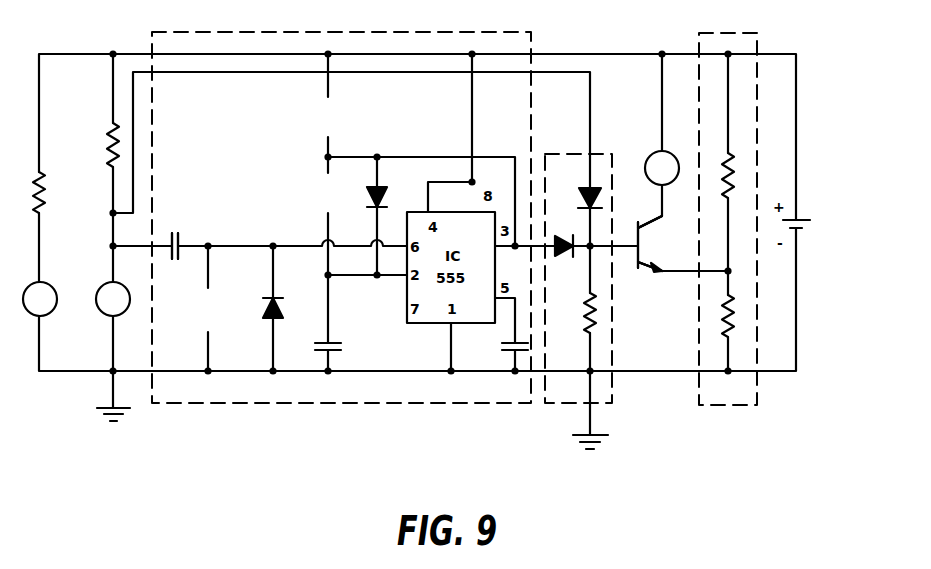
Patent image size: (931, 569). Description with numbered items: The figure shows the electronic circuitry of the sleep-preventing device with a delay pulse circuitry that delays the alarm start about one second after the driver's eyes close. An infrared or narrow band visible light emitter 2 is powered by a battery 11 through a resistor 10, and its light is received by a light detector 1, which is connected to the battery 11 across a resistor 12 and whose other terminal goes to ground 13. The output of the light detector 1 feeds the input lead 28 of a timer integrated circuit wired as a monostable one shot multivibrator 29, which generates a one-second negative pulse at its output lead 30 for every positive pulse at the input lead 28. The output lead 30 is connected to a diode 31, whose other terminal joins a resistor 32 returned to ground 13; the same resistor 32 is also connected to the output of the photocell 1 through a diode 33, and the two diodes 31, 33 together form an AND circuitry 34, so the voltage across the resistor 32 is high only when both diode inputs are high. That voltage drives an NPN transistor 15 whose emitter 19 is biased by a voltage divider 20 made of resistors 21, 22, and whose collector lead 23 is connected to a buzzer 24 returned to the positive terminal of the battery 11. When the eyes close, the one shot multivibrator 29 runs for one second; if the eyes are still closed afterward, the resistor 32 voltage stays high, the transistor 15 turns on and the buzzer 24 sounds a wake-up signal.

The light detector 1 is at (103, 316).
The light emitter 2 is at (55, 288).
The resistor 10 is at (45, 193).
The battery 11 is at (805, 218).
The resistor 12 is at (106, 143).
The ground 13 is at (108, 392).
The NPN transistor 15 is at (637, 230).
The emitter 19 is at (647, 275).
The voltage divider 20 is at (726, 32).
The resistor 21 is at (733, 163).
The resistor 22 is at (735, 318).
The collector lead 23 is at (650, 227).
The buzzer 24 is at (648, 158).
The input lead 28 is at (138, 247).
The monostable one shot multivibrator 29 is at (258, 405).
The output lead 30 is at (540, 248).
The diode 31 is at (558, 258).
The resistor 32 is at (586, 324).
The diode 33 is at (580, 192).
The AND circuitry 34 is at (569, 152).